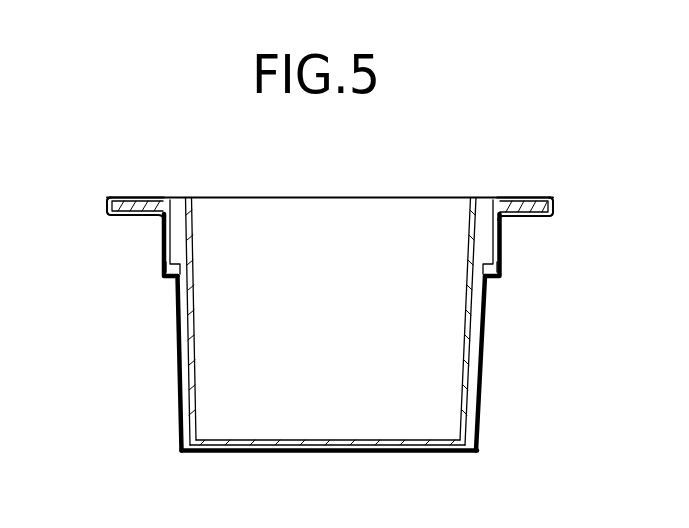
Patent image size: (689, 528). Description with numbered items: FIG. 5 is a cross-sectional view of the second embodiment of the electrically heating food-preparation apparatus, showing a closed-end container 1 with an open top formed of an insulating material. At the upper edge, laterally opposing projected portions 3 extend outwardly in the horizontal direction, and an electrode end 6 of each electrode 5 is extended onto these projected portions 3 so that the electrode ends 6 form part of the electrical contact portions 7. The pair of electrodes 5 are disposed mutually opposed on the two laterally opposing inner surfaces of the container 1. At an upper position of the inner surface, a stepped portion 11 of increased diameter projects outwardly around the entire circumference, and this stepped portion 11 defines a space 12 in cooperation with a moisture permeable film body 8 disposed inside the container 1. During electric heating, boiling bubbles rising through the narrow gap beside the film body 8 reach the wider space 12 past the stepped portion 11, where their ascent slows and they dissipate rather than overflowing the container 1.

The container 1 is at (479, 407).
The projected portions 3 is at (128, 207).
The electrode 5 is at (175, 358).
The electrode end 6 is at (182, 242).
The electrical contact portions 7 is at (128, 190).
The moisture permeable film body 8 is at (472, 221).
The stepped portion 11 is at (187, 270).
The space 12 is at (176, 205).